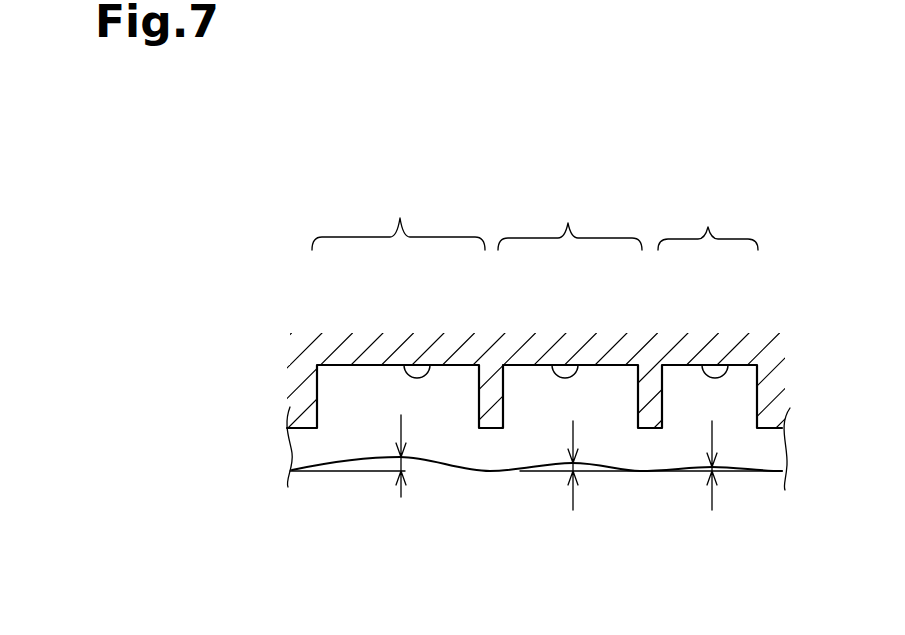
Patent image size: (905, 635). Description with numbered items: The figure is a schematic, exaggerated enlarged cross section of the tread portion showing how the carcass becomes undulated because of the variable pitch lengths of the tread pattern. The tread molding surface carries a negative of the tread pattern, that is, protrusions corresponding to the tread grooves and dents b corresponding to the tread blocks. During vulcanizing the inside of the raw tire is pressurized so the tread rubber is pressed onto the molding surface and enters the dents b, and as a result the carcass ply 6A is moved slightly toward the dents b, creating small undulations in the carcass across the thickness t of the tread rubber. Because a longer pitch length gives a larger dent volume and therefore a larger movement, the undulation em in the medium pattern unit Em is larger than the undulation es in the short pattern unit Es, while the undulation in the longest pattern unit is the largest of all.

The carcass ply 6A is at (767, 471).
The thickness of sealing member t is at (345, 443).
The dents b is at (437, 365).
The pattern unit Em is at (570, 222).
The pattern unit Es is at (708, 223).
The carcass undulation em is at (578, 468).
The carcass undulation es is at (716, 470).